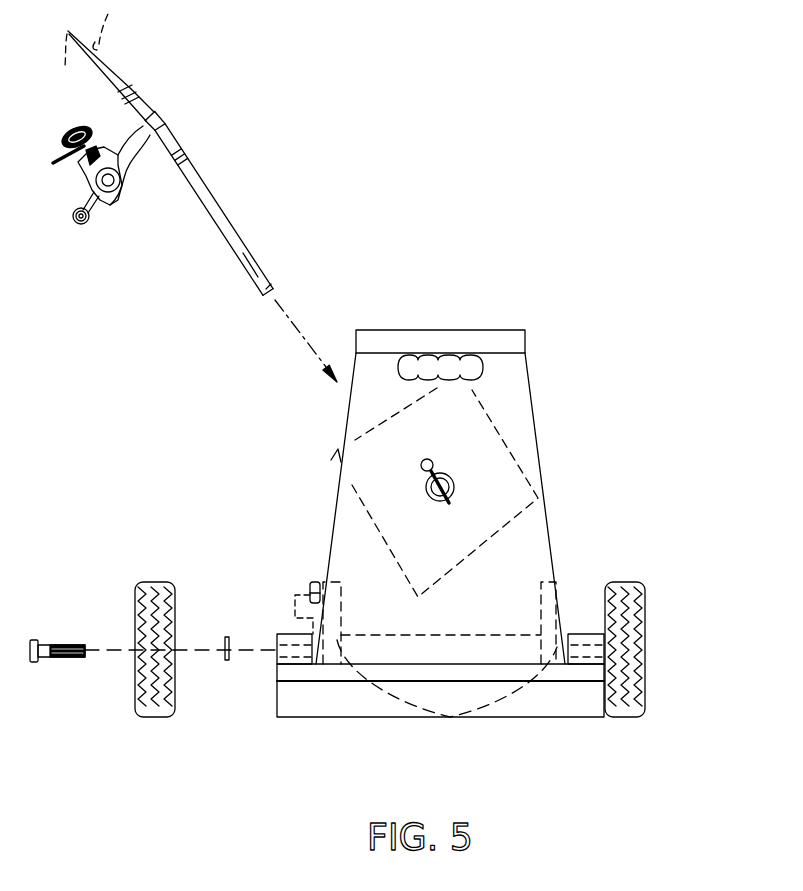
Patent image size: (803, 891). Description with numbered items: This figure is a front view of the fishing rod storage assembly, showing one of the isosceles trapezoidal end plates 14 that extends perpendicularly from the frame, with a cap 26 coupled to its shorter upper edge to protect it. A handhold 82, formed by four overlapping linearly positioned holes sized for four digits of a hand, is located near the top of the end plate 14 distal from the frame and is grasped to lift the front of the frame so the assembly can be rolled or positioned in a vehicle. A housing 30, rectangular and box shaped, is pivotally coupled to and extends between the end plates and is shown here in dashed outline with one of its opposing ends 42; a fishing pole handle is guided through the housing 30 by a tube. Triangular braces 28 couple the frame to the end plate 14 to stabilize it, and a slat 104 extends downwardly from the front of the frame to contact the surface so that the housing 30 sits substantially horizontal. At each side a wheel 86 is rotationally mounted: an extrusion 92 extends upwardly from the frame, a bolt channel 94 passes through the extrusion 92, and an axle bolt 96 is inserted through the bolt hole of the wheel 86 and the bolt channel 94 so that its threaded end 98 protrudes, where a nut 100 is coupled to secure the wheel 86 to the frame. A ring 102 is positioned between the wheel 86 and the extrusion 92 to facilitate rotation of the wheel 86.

The end plate 14 is at (533, 390).
The cap 26 is at (503, 338).
The brace 28 is at (452, 720).
The housing 30 is at (537, 425).
The opposing end 42 is at (528, 474).
The handhold 82 is at (447, 364).
The wheel 86 is at (150, 717).
The extrusion 92 is at (298, 666).
The bolt channel 94 is at (292, 640).
The axle bolt 96 is at (35, 640).
The threaded end 98 is at (62, 660).
The nut 100 is at (315, 582).
The ring 102 is at (227, 662).
The slat 104 is at (540, 700).